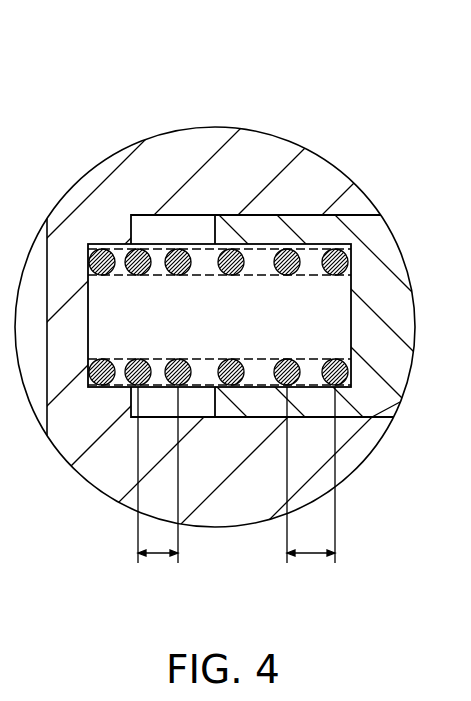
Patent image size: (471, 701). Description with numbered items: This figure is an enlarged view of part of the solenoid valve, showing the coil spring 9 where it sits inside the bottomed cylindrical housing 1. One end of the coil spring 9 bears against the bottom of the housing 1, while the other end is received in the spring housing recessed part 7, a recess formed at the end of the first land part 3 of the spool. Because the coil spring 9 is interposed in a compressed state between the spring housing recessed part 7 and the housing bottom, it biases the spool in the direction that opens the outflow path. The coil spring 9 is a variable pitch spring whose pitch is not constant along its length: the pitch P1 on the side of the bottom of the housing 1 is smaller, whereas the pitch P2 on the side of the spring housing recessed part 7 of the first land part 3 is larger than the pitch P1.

The housing 1 is at (190, 148).
The first land part 3 is at (337, 225).
The spring housing recessed part 7 is at (272, 247).
The coil spring 9 is at (102, 387).
The pitch P1 is at (160, 556).
The pitch P2 is at (308, 556).